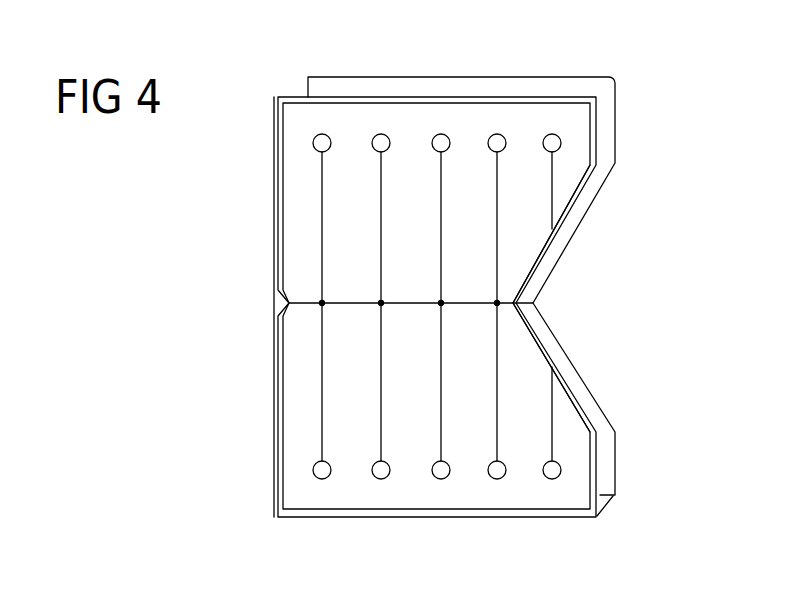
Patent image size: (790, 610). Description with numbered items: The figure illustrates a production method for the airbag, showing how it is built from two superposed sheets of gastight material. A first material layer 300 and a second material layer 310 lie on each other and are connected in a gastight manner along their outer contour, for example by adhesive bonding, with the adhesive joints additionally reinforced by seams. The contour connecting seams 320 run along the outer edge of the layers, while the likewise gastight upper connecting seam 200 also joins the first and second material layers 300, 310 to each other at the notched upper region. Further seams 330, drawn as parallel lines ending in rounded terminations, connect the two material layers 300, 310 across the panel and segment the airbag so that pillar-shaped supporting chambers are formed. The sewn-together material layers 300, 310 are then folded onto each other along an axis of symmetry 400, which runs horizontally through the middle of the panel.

The first material layer 300 is at (530, 120).
The second material layer 310 is at (620, 120).
The contour connecting seams 320 is at (272, 353).
The further seams 330 is at (383, 382).
The upper connecting seam 200 is at (527, 297).
The axis of symmetry 400 is at (533, 303).